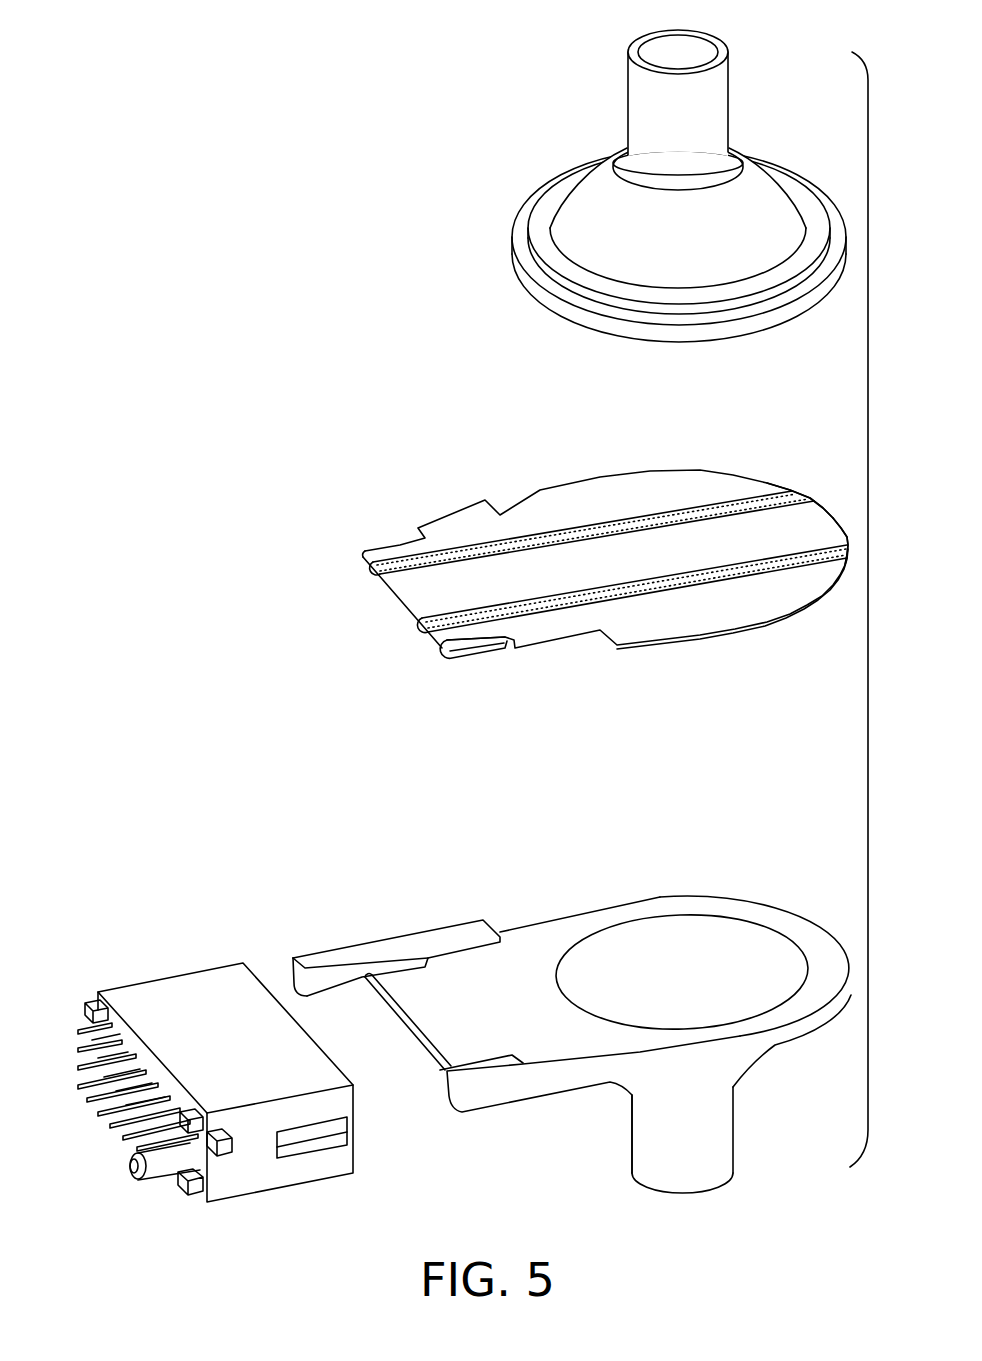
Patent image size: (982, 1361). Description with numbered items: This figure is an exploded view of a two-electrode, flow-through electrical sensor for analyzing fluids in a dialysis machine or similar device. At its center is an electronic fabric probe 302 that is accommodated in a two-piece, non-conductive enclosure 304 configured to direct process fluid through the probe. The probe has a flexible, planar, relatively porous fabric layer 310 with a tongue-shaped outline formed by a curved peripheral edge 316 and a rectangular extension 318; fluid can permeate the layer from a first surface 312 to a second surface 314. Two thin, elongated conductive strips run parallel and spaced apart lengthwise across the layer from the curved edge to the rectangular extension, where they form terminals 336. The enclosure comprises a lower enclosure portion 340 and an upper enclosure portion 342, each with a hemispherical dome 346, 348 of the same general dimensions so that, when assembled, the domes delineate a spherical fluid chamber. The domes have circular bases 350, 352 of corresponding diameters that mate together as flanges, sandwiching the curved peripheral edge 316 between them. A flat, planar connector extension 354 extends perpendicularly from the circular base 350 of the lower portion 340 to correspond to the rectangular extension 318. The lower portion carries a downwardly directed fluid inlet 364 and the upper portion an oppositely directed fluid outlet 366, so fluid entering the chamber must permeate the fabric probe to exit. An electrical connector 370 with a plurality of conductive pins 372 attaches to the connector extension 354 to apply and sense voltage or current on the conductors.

The electronic fabric probe 302 is at (527, 547).
The enclosure 304 is at (868, 623).
The fabric layer 310 is at (637, 553).
The first surface 312 is at (617, 658).
The second surface 314 is at (815, 513).
The curved peripheral edge 316 is at (845, 525).
The rectangular extension 318 is at (405, 604).
The terminals 336 is at (375, 571).
The lower enclosure portion 340 is at (572, 1010).
The upper enclosure portion 342 is at (583, 186).
The lower hemispherical dome 346 is at (697, 985).
The upper hemispherical dome 348 is at (602, 210).
The circular base 350 is at (820, 947).
The circular base 352 is at (520, 262).
The connector extension 354 is at (418, 1040).
The fluid inlet 364 is at (663, 1125).
The fluid outlet 366 is at (653, 108).
The electrical connector 370 is at (187, 1027).
The conductive pins 372 is at (142, 1190).